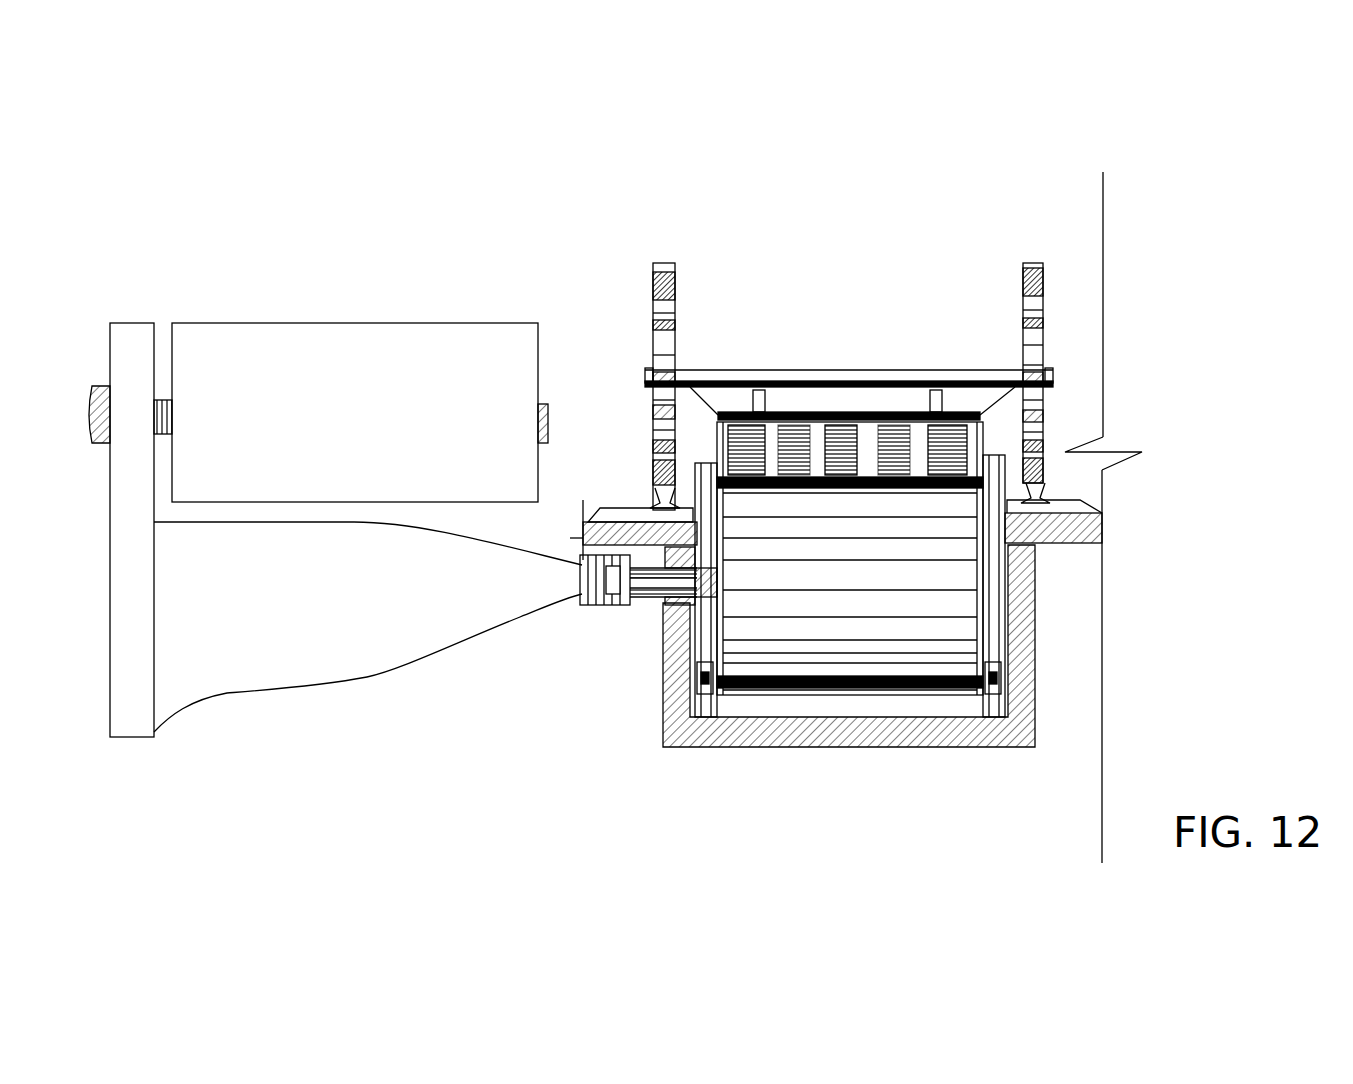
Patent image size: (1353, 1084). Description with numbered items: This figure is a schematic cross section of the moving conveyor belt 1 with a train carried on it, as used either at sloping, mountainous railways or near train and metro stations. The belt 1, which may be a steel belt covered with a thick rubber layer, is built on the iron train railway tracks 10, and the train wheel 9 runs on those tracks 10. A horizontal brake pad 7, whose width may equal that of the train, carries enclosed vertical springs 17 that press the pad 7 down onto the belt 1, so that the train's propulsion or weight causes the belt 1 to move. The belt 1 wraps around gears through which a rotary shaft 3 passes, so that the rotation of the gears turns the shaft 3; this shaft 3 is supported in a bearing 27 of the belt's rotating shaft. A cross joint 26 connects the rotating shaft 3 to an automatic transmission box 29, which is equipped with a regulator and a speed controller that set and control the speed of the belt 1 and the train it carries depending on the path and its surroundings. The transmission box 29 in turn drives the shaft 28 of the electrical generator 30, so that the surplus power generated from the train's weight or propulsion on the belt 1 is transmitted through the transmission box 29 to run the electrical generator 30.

The metal moving/conveyor belt 1 is at (820, 600).
The rotary axis/shaft 3 is at (645, 602).
The horizontal brake pad 7 is at (772, 452).
The train wheel 9 is at (1037, 262).
The train railway tracks 10 is at (641, 478).
The springs 17 is at (738, 448).
The cross joint 26 is at (718, 695).
The bearing of the belt's rotating shaft 27 is at (706, 706).
The axis/shaft of the electrical generator 28 is at (590, 623).
The automatic transmission box 29 is at (413, 627).
The electrical generator 30 is at (233, 360).